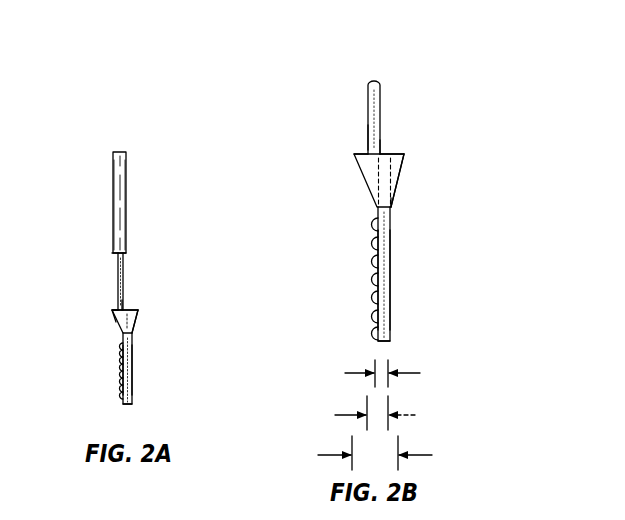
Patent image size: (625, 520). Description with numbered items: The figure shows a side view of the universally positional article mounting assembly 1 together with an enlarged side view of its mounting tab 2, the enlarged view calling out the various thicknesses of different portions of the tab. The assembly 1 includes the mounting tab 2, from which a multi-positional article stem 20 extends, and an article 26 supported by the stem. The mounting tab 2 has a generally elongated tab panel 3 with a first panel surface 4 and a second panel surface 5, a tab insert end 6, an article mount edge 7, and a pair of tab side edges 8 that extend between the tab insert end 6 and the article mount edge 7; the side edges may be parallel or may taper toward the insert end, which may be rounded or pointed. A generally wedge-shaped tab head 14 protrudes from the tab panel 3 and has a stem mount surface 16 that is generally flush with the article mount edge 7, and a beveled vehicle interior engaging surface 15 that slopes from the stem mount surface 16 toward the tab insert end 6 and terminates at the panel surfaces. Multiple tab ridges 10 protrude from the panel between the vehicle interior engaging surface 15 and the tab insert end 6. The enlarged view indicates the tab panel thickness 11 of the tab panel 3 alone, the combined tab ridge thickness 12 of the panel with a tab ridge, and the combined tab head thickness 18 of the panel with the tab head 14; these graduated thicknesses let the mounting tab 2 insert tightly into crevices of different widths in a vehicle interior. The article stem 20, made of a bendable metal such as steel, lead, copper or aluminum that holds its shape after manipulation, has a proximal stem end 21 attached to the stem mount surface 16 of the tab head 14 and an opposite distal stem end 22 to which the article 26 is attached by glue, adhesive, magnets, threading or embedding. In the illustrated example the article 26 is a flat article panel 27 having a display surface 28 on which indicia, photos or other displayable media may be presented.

In FIG. 2A, the assembly 1 is at (69, 127).
In FIG. 2B, the assembly 1 is at (309, 52).
In FIG. 2A, the mounting tab 2 is at (157, 309).
In FIG. 2B, the mounting tab 2 is at (406, 144).
In FIG. 2A, the tab panel 3 is at (134, 368).
In FIG. 2B, the tab panel 3 is at (394, 256).
In FIG. 2A, the first panel surface 4 is at (120, 362).
In FIG. 2B, the first panel surface 4 is at (372, 250).
In FIG. 2A, the second panel surface 5 is at (138, 326).
In FIG. 2B, the second panel surface 5 is at (391, 207).
In FIG. 2A, the tab insert end 6 is at (128, 405).
In FIG. 2B, the tab insert end 6 is at (378, 342).
In FIG. 2A, the article mount edge 7 is at (127, 308).
In FIG. 2B, the article mount edge 7 is at (388, 151).
In FIG. 2A, the tab side edges 8 is at (132, 378).
In FIG. 2B, the tab side edges 8 is at (386, 298).
In FIG. 2A, the tab ridges 10 is at (122, 390).
In FIG. 2B, the tab ridges 10 is at (370, 298).
In FIG. 2B, the tab panel thickness 11 is at (345, 374).
In FIG. 2B, the tab ridge thickness 12 is at (335, 414).
In FIG. 2A, the tab head 14 is at (118, 333).
In FIG. 2B, the tab head 14 is at (356, 183).
In FIG. 2A, the vehicle interior engaging surface 15 is at (135, 320).
In FIG. 2B, the vehicle interior engaging surface 15 is at (396, 183).
In FIG. 2A, the stem mount surface 16 is at (111, 322).
In FIG. 2B, the stem mount surface 16 is at (354, 153).
In FIG. 2B, the tab head thickness 18 is at (318, 456).
In FIG. 2A, the article stem 20 is at (126, 271).
In FIG. 2B, the article stem 20 is at (365, 106).
In FIG. 2A, the proximal stem end 21 is at (116, 306).
In FIG. 2B, the proximal stem end 21 is at (367, 135).
In FIG. 2A, the distal stem end 22 is at (112, 254).
In FIG. 2A, the article 26 is at (129, 171).
In FIG. 2A, the article panel 27 is at (121, 198).
In FIG. 2A, the display surface 28 is at (112, 186).